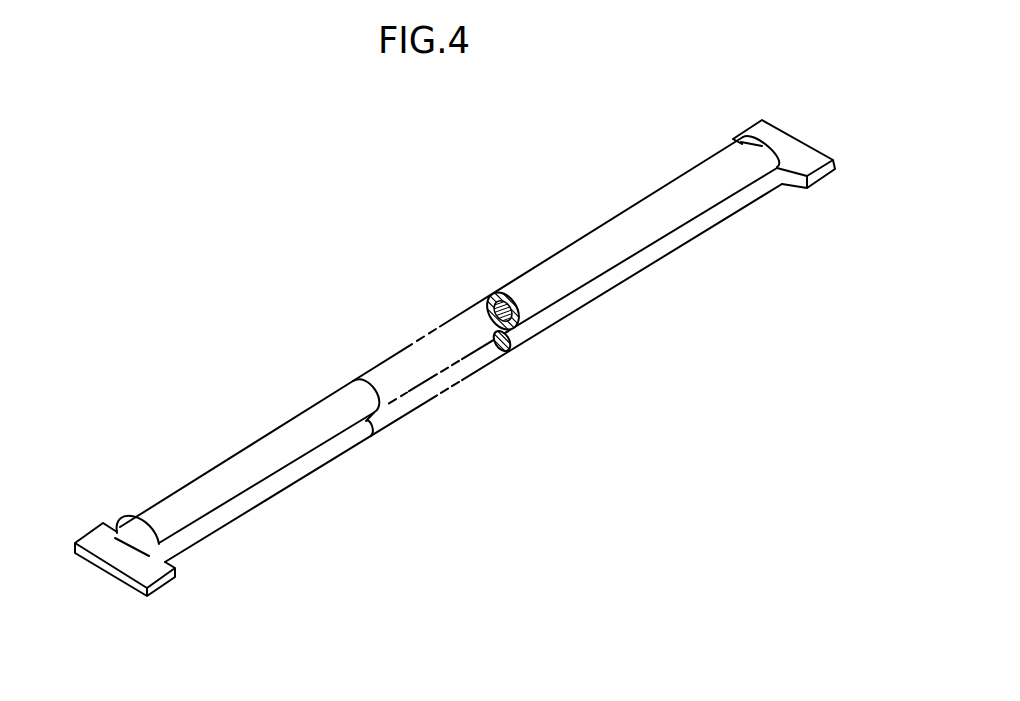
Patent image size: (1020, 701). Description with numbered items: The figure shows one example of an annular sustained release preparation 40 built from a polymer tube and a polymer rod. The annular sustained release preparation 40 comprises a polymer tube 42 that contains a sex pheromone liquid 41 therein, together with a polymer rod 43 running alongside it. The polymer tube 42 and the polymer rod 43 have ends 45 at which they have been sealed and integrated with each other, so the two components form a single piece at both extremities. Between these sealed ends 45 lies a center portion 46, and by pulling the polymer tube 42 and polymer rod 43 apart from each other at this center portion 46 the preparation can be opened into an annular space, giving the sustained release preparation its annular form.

The annular sustained release preparation 40 is at (453, 348).
The sex pheromone liquid 41 is at (498, 298).
The polymer tube 42 is at (287, 437).
The polymer rod 43 is at (228, 518).
The ends 45 is at (130, 565).
The center portion 46 is at (657, 245).